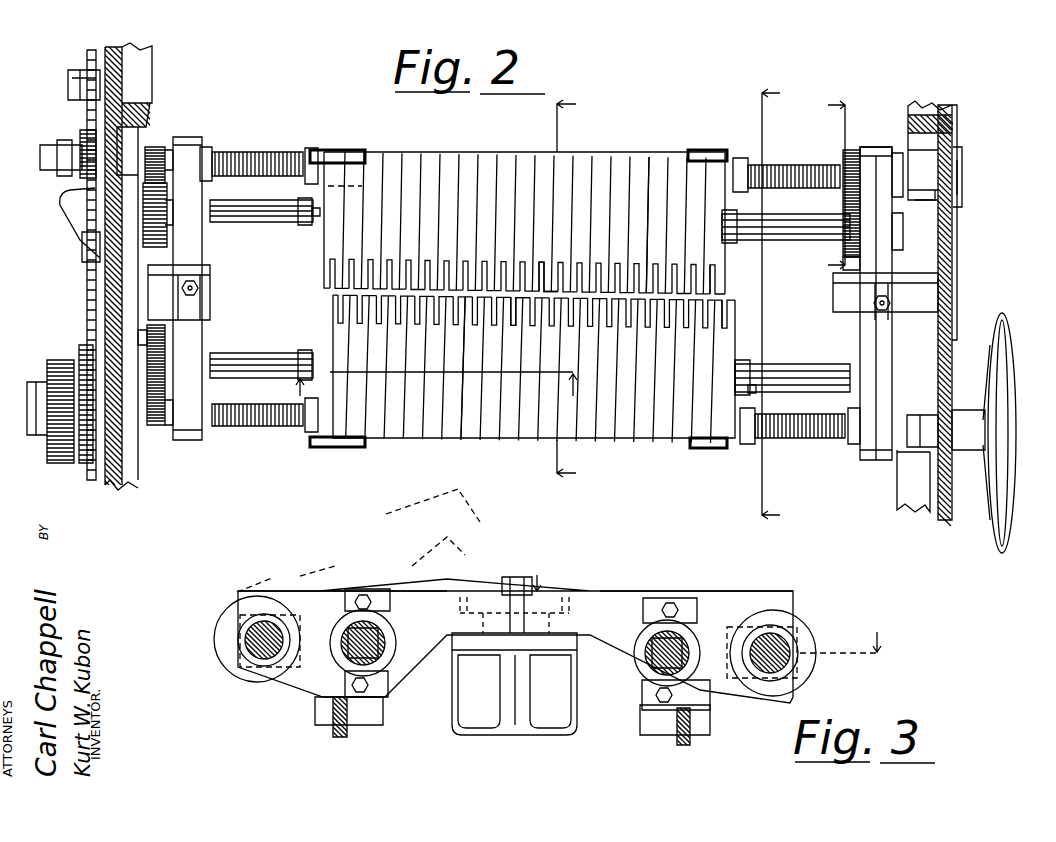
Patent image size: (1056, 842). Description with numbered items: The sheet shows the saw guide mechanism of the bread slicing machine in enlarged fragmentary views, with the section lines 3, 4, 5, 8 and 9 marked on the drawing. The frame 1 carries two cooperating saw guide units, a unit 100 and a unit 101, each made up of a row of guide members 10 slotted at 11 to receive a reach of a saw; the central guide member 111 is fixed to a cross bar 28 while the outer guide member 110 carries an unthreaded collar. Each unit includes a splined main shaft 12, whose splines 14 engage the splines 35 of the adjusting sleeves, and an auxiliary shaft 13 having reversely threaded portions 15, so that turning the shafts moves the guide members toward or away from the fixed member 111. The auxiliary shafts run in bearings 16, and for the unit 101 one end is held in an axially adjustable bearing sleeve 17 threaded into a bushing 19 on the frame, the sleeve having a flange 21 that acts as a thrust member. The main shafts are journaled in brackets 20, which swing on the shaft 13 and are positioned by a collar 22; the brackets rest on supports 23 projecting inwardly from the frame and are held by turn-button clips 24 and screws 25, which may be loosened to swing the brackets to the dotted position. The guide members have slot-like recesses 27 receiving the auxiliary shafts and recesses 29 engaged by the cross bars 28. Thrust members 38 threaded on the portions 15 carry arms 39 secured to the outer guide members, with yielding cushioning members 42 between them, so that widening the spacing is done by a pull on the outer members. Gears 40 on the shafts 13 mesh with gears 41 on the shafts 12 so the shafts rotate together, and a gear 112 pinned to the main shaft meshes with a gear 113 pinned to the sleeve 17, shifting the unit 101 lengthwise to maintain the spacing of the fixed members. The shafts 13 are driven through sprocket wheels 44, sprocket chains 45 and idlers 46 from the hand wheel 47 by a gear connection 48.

In FIG. 2, the frame 1 is at (952, 122).
In FIG. 2, the section line 3— 3 is at (779, 305).
In FIG. 2, the delivery conveyor 4 is at (573, 289).
In FIG. 3, the section line 5- 5 is at (710, 604).
In FIG. 2, the section line 8- 8 is at (829, 185).
In FIG. 2, the section line 9- 9 is at (429, 394).
In FIG. 2, the guide members 10 is at (650, 157).
In FIG. 3, the guide members 10 is at (307, 591).
In FIG. 2, the slot 11 is at (716, 276).
In FIG. 2, the main shaft 12 is at (262, 223).
In FIG. 3, the main shaft 12 is at (358, 645).
In FIG. 2, the auxiliary shaft 13 is at (790, 166).
In FIG. 3, the auxiliary shaft 13 is at (255, 660).
In FIG. 3, the splines 14 is at (390, 612).
In FIG. 2, the reversely threaded portions 15 is at (266, 152).
In FIG. 3, the reversely threaded portions 15 is at (248, 632).
In FIG. 2, the bearings 16 is at (900, 480).
In FIG. 2, the bearing sleeve 17 is at (897, 153).
In FIG. 2, the bushing 19 is at (965, 170).
In FIG. 2, the brackets 20 is at (877, 247).
In FIG. 3, the brackets 20 is at (216, 643).
In FIG. 2, the flange 21 is at (875, 147).
In FIG. 2, the collar 22 is at (207, 150).
In FIG. 2, the supports 23 is at (198, 288).
In FIG. 3, the supports 23 is at (470, 720).
In FIG. 2, the clips 24 is at (192, 301).
In FIG. 3, the clips 24 is at (540, 600).
In FIG. 2, the screws 25 is at (198, 290).
In FIG. 3, the screws 25 is at (517, 580).
In FIG. 3, the slot-like recesses 27 is at (293, 683).
In FIG. 3, the cross bars 28 is at (340, 738).
In FIG. 3, the slot-like recesses 29 is at (330, 717).
In FIG. 3, the splines 35 is at (378, 656).
In FIG. 2, the thrust members 38 is at (312, 148).
In FIG. 3, the thrust members 38 is at (262, 698).
In FIG. 2, the arms 39 is at (305, 226).
In FIG. 3, the arms 39 is at (378, 590).
In FIG. 2, the gears 40 is at (160, 150).
In FIG. 2, the gears 41 is at (168, 241).
In FIG. 2, the cushioning members 42 is at (312, 206).
In FIG. 2, the sprocket wheels 44 is at (85, 138).
In FIG. 2, the sprocket chains 45 is at (88, 300).
In FIG. 2, the idlers 46 is at (70, 78).
In FIG. 2, the hand wheel 47 is at (1012, 367).
In FIG. 2, the gear connection 48 is at (60, 463).
In FIG. 2, the saw guide unit 100 is at (400, 440).
In FIG. 3, the saw guide unit 100 is at (325, 590).
In FIG. 2, the saw guide unit 101 is at (498, 152).
In FIG. 3, the saw guide unit 101 is at (640, 592).
In FIG. 2, the outer guide member 110 is at (372, 139).
In FIG. 2, the central guide member 111 is at (566, 146).
In FIG. 2, the gear 112 is at (848, 266).
In FIG. 2, the gear 113 is at (850, 153).